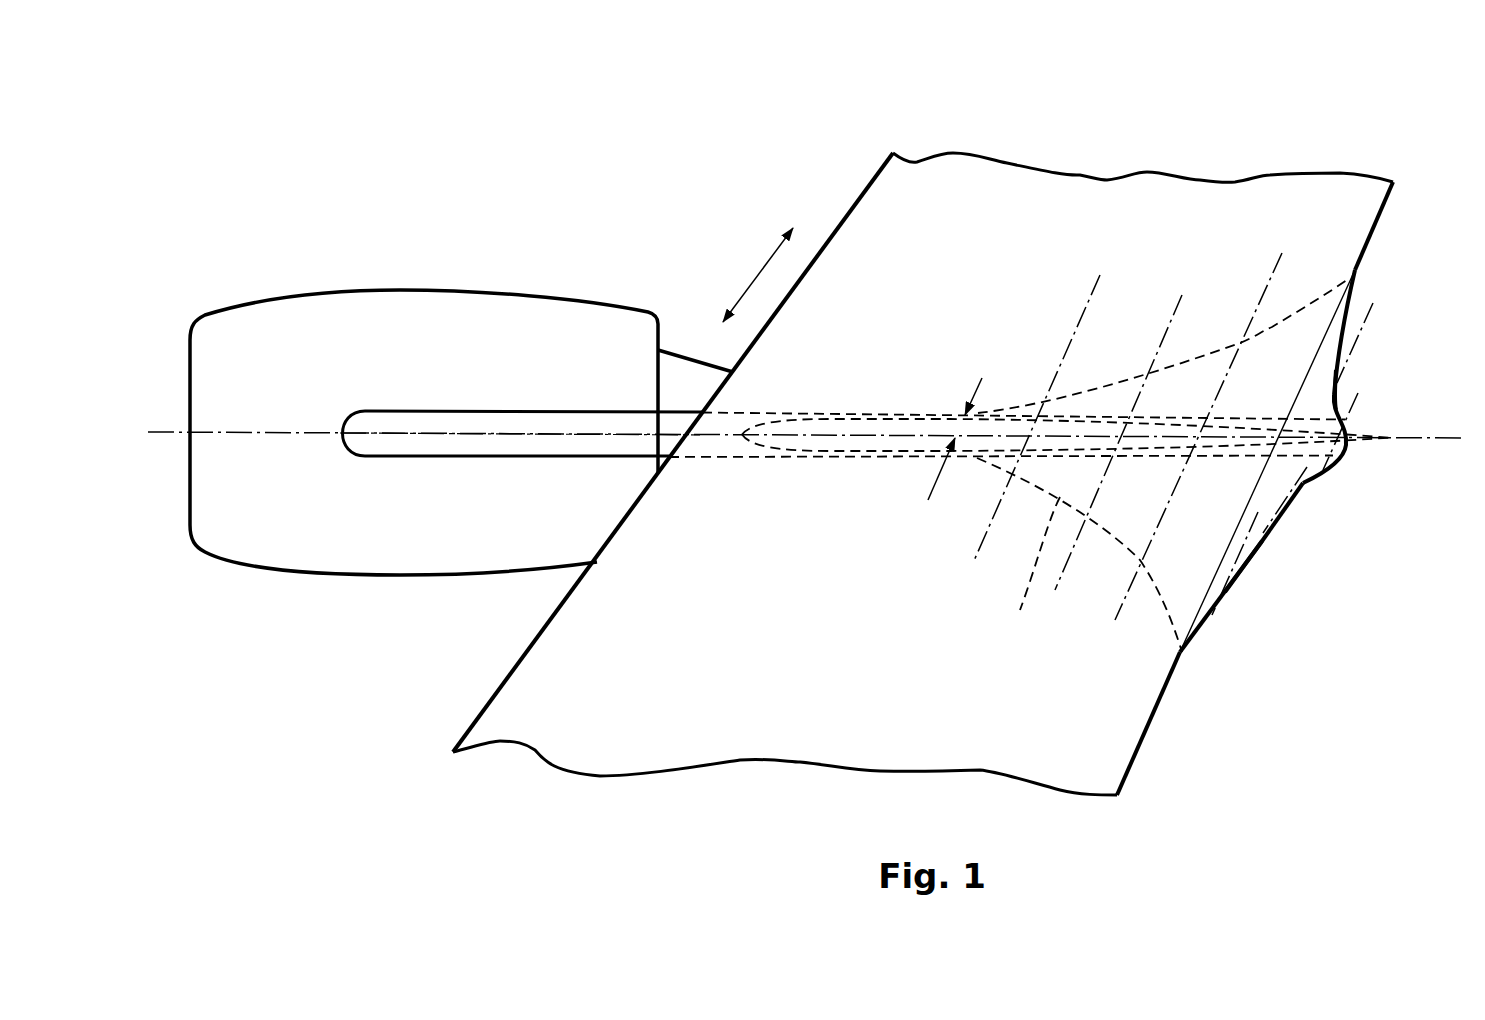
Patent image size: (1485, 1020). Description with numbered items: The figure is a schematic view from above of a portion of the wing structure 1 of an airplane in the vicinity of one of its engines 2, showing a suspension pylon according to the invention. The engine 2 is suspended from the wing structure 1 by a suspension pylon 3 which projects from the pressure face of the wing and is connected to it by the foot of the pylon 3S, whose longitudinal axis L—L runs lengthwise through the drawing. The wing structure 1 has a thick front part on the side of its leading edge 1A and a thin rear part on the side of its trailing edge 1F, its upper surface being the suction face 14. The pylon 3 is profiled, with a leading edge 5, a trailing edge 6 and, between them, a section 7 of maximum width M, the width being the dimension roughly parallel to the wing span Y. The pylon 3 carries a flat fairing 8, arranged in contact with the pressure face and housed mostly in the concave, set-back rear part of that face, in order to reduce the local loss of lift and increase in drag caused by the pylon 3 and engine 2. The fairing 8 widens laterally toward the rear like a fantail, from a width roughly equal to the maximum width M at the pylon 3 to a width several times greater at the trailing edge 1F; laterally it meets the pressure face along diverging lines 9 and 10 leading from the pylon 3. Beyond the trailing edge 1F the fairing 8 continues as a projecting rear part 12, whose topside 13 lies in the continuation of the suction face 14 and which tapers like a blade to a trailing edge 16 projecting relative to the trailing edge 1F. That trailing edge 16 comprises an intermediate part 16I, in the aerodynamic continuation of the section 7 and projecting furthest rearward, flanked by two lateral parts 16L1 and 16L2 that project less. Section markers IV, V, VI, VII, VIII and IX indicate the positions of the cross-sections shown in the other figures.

The wing structure 1 is at (889, 477).
The leading edge 1A is at (484, 710).
The trailing edge 1F is at (1140, 747).
The engine 2 is at (399, 300).
The suspension pylon 3 is at (546, 418).
The foot of the pylon 3S is at (754, 443).
The leading edge 5 is at (435, 433).
The trailing edge 6 is at (1232, 568).
The section of maximum width 7 is at (972, 452).
The fairing 8 is at (1132, 518).
The diverging line 9 is at (1020, 610).
The diverging line 10 is at (1272, 327).
The projecting rear part 12 is at (1238, 574).
The topside 13 is at (1350, 316).
The suction face 14 is at (738, 713).
The trailing edge 16 is at (1210, 628).
The intermediate part 16I is at (1352, 444).
The lateral part 16L1 is at (1270, 533).
The lateral part 16L2 is at (1342, 346).
The longitudinal axis L is at (806, 417).
The wing span Y is at (758, 275).
The maximum width M is at (950, 440).
The section IV is at (1360, 400).
The section V is at (1375, 320).
The section VI is at (1362, 268).
The section VII is at (1280, 272).
The section VIII is at (1177, 318).
The section IX is at (1102, 292).